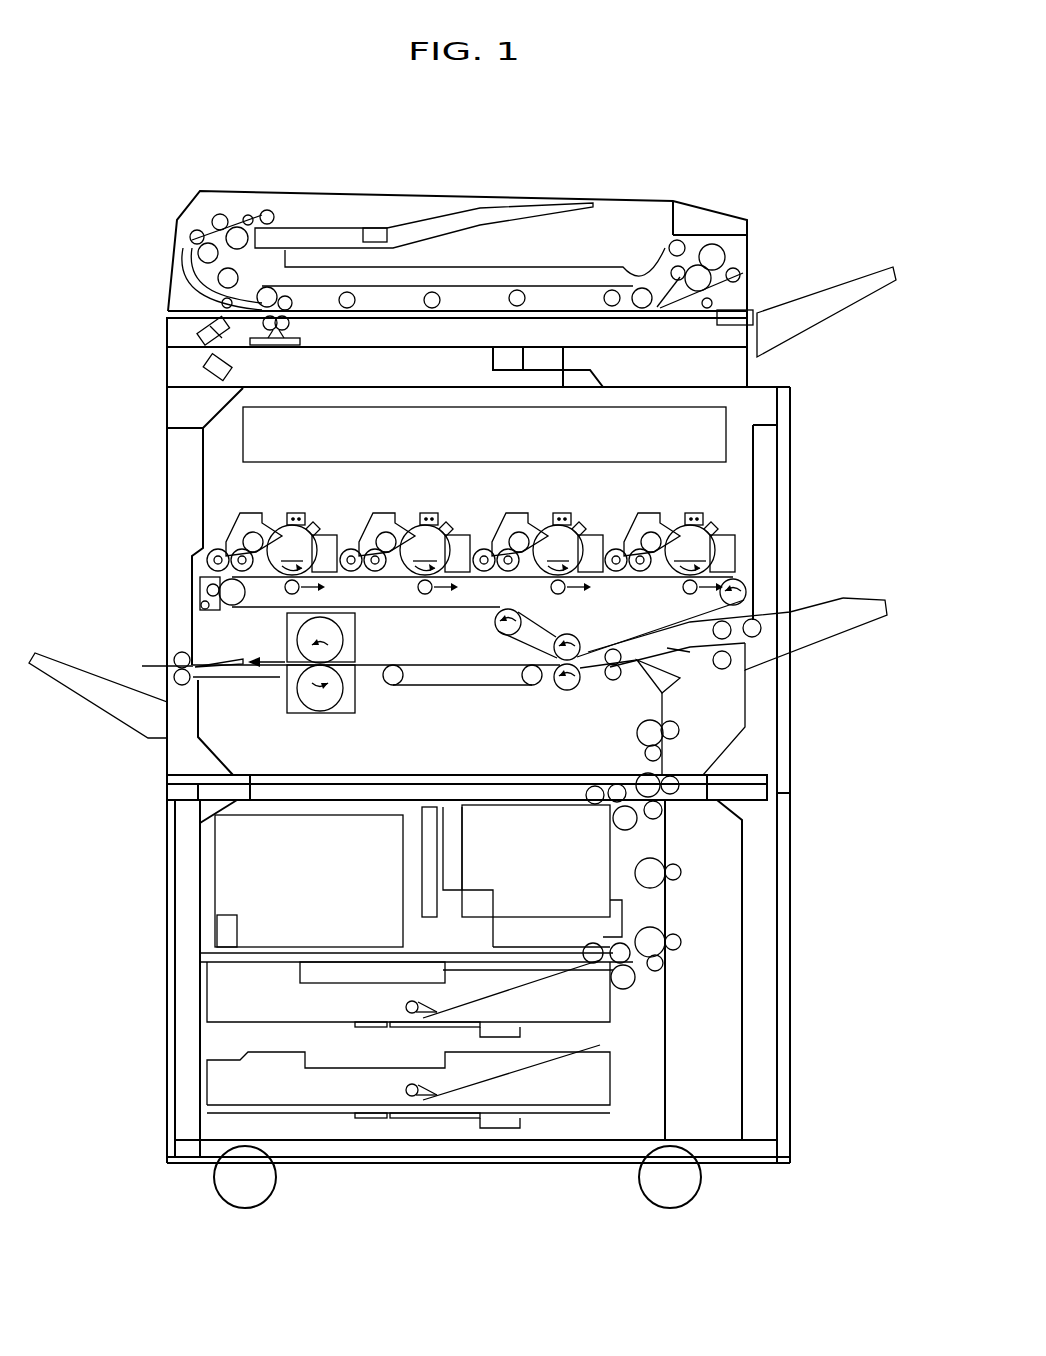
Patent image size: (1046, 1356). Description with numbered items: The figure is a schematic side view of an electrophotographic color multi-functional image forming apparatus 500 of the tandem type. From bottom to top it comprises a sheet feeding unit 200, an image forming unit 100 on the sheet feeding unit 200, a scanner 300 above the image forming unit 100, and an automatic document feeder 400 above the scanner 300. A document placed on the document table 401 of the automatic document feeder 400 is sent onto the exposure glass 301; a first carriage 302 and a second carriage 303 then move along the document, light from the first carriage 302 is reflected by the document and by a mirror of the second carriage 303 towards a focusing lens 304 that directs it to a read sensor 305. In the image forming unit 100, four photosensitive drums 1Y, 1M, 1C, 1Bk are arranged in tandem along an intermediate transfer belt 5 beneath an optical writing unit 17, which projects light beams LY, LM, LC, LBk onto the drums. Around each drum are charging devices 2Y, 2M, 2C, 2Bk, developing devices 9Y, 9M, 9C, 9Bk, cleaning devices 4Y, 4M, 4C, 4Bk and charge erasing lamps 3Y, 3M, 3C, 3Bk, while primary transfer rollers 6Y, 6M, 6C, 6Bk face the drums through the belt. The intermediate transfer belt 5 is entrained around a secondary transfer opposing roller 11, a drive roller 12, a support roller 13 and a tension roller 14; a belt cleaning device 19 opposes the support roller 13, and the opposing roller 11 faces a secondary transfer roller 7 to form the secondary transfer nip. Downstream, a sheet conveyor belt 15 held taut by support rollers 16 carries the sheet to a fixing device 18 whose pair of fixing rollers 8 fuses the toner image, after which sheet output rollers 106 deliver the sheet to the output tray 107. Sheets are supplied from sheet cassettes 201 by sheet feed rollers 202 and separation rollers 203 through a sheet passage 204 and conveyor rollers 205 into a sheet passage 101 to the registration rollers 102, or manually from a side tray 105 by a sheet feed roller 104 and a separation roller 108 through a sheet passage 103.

The image forming apparatus 500 is at (708, 138).
The automatic document feeder 400 is at (150, 260).
The document table 401 is at (405, 225).
The scanner 300 is at (150, 343).
The exposure glass 301 is at (558, 305).
The first carriage 302 is at (300, 339).
The second carriage 303 is at (195, 355).
The focusing lens 304 is at (493, 360).
The read sensor 305 is at (562, 358).
The image forming unit 100 is at (150, 485).
The optical writing unit 17 is at (726, 425).
The light beam LY is at (287, 520).
The light beam LM is at (420, 520).
The light beam LC is at (553, 520).
The light beam LBk is at (685, 520).
The photosensitive drum 1Y is at (292, 550).
The photosensitive drum 1M is at (425, 550).
The photosensitive drum 1C is at (558, 550).
The photosensitive drum 1Bk is at (690, 550).
The charging device 2Y is at (293, 512).
The charging device 2M is at (427, 512).
The charging device 2C is at (560, 512).
The charging device 2Bk is at (693, 512).
The charge erasing lamp 3Y is at (314, 522).
The charge erasing lamp 3M is at (447, 522).
The charge erasing lamp 3C is at (580, 522).
The charge erasing lamp 3Bk is at (714, 522).
The cleaning device 4Y is at (333, 535).
The cleaning device 4M is at (466, 535).
The cleaning device 4C is at (599, 535).
The cleaning device 4Bk is at (740, 535).
The developing device 9Y is at (246, 512).
The developing device 9M is at (379, 512).
The developing device 9C is at (512, 512).
The developing device 9Bk is at (644, 512).
The primary transfer roller 6Y is at (300, 590).
The primary transfer roller 6M is at (415, 590).
The primary transfer roller 6C is at (549, 590).
The primary transfer roller 6Bk is at (681, 590).
The intermediate transfer belt 5 is at (455, 607).
The drive roller 12 is at (748, 582).
The support roller 13 is at (240, 603).
The tension roller 14 is at (497, 628).
The secondary transfer opposing roller 11 is at (572, 635).
The secondary transfer roller 7 is at (575, 692).
The sheet conveyor belt 15 is at (460, 688).
The support rollers 16 is at (392, 687).
The fixing rollers 8 is at (352, 625).
The fixing device 18 is at (330, 720).
The belt cleaning device 19 is at (240, 620).
The sheet output rollers 106 is at (172, 650).
The output tray 107 is at (95, 710).
The separation roller 108 is at (745, 625).
The sheet passage 101 is at (672, 712).
The registration rollers 102 is at (613, 683).
The sheet passage 103 is at (680, 655).
The sheet feed roller 104 is at (770, 665).
The side tray 105 is at (820, 642).
The sheet feeding unit 200 is at (150, 843).
The sheet cassettes 201 is at (470, 928).
The sheet feed rollers 202 is at (590, 805).
The separation rollers 203 is at (615, 825).
The sheet passage 204 is at (672, 898).
The conveyor rollers 205 is at (680, 795).